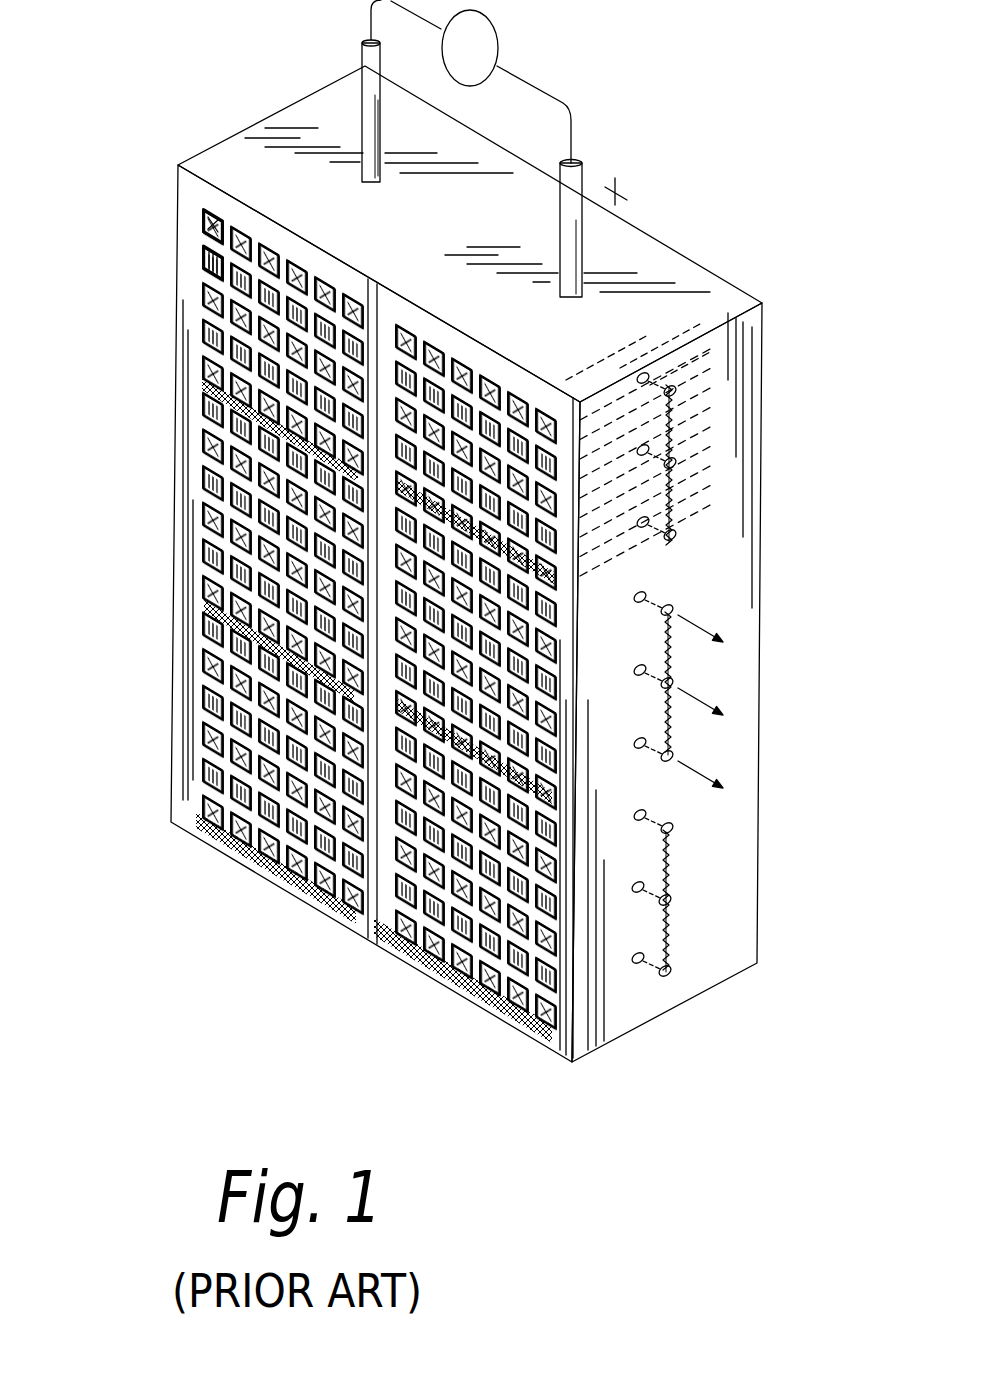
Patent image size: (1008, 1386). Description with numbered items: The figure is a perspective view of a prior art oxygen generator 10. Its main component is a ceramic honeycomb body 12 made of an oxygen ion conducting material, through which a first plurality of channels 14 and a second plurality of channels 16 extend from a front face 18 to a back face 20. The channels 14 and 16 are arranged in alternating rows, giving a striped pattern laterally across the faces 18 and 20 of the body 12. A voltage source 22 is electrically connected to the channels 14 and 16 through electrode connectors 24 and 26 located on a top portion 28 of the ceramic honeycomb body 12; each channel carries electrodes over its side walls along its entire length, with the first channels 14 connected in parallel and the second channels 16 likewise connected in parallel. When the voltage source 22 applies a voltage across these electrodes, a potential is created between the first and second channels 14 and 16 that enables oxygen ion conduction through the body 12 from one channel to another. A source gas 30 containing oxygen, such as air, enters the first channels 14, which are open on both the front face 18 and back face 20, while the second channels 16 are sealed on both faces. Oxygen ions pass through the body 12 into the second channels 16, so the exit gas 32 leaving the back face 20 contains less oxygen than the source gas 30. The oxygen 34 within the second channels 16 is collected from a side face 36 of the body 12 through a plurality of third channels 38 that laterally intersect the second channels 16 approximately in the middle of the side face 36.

The oxygen generator 10 is at (177, 137).
The ceramic honeycomb body 12 is at (175, 648).
The first plurality of channels 14 is at (203, 218).
The second plurality of channels 16 is at (203, 250).
The front face 18 is at (383, 862).
The back face 20 is at (768, 587).
The voltage source 22 is at (494, 29).
The electrode connector 24 is at (580, 238).
The electrode connector 26 is at (367, 100).
The top portion 28 is at (660, 303).
The source gas 30 is at (209, 878).
The exit gas 32 is at (793, 483).
The oxygen 34 is at (737, 638).
The side face 36 is at (710, 875).
The third channels 38 is at (650, 533).